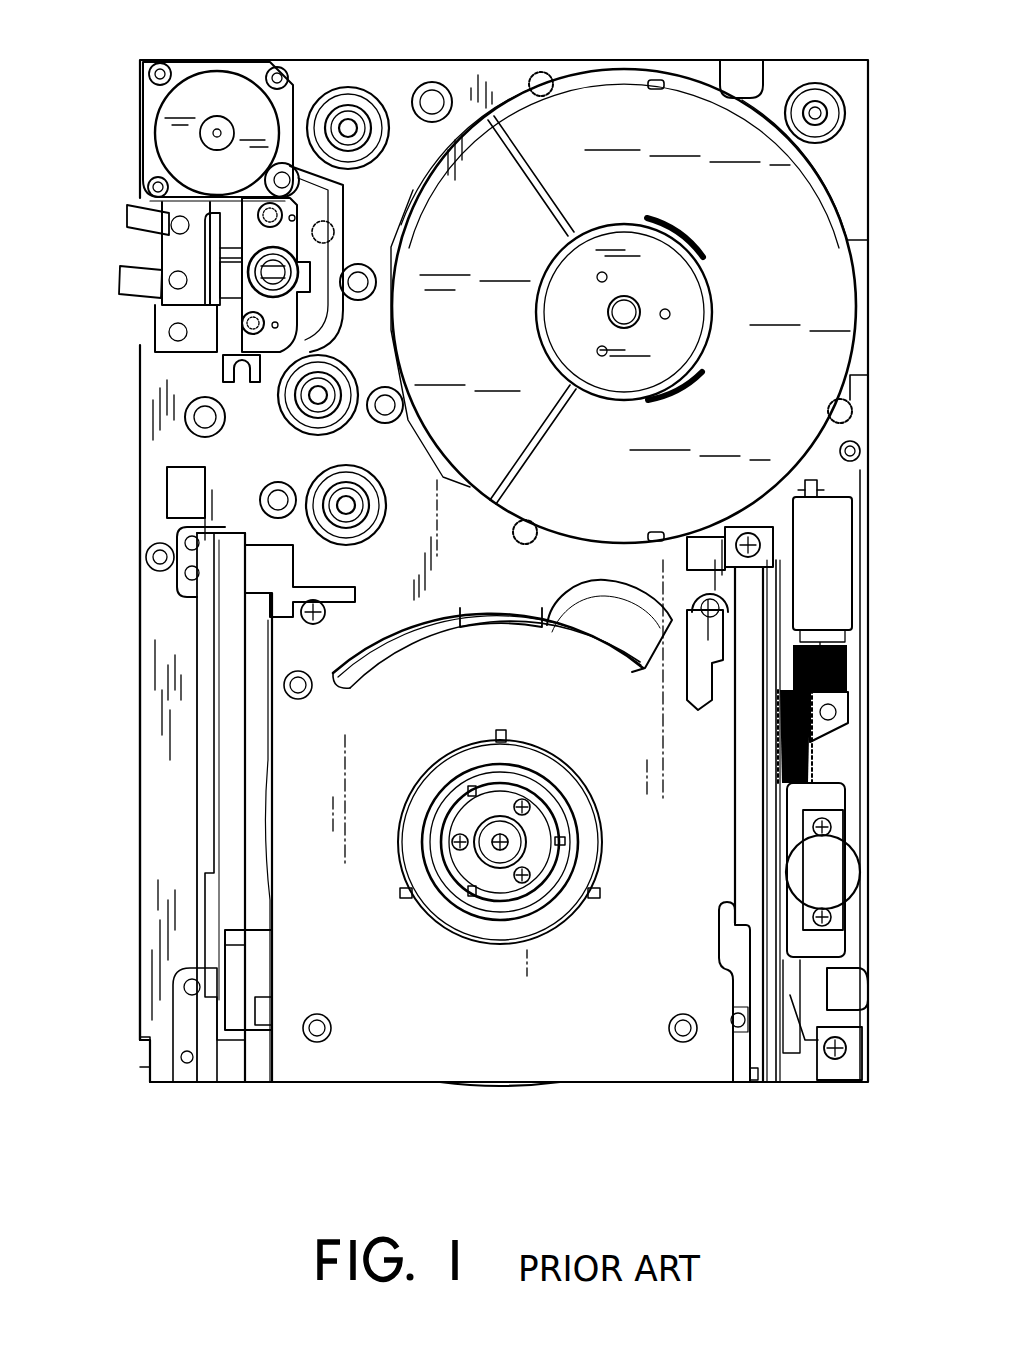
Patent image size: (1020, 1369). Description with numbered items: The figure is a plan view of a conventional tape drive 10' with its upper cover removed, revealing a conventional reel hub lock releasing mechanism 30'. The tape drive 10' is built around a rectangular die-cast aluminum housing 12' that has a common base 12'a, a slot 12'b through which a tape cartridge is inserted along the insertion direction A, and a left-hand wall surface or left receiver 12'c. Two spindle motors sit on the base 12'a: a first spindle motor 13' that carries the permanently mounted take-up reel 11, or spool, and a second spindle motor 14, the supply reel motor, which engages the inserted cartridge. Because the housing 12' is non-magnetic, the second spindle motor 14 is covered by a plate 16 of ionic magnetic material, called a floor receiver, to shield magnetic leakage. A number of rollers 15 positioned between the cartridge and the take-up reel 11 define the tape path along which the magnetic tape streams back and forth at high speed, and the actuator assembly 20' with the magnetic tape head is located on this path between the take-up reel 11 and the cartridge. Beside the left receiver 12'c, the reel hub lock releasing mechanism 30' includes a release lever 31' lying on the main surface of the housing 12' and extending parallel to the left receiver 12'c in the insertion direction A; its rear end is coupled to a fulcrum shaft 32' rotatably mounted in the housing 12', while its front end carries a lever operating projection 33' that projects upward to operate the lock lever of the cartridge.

The tape drive 10' is at (473, 619).
The take-up reel 11 is at (817, 220).
The housing 12' is at (162, 807).
The base 12'a is at (164, 807).
The slot 12'b is at (733, 831).
The left receiver 12'c is at (162, 786).
The first spindle motor 13' is at (649, 309).
The second spindle motor 14 is at (538, 872).
The rollers 15 is at (360, 102).
The plate 16 is at (390, 1057).
The actuator assembly 20' is at (216, 229).
The reel hub lock releasing mechanism 30' is at (174, 807).
The release lever 31' is at (180, 837).
The fulcrum shaft 32' is at (222, 575).
The lever operating projection 33' is at (276, 1026).
The insertion direction A is at (500, 1130).